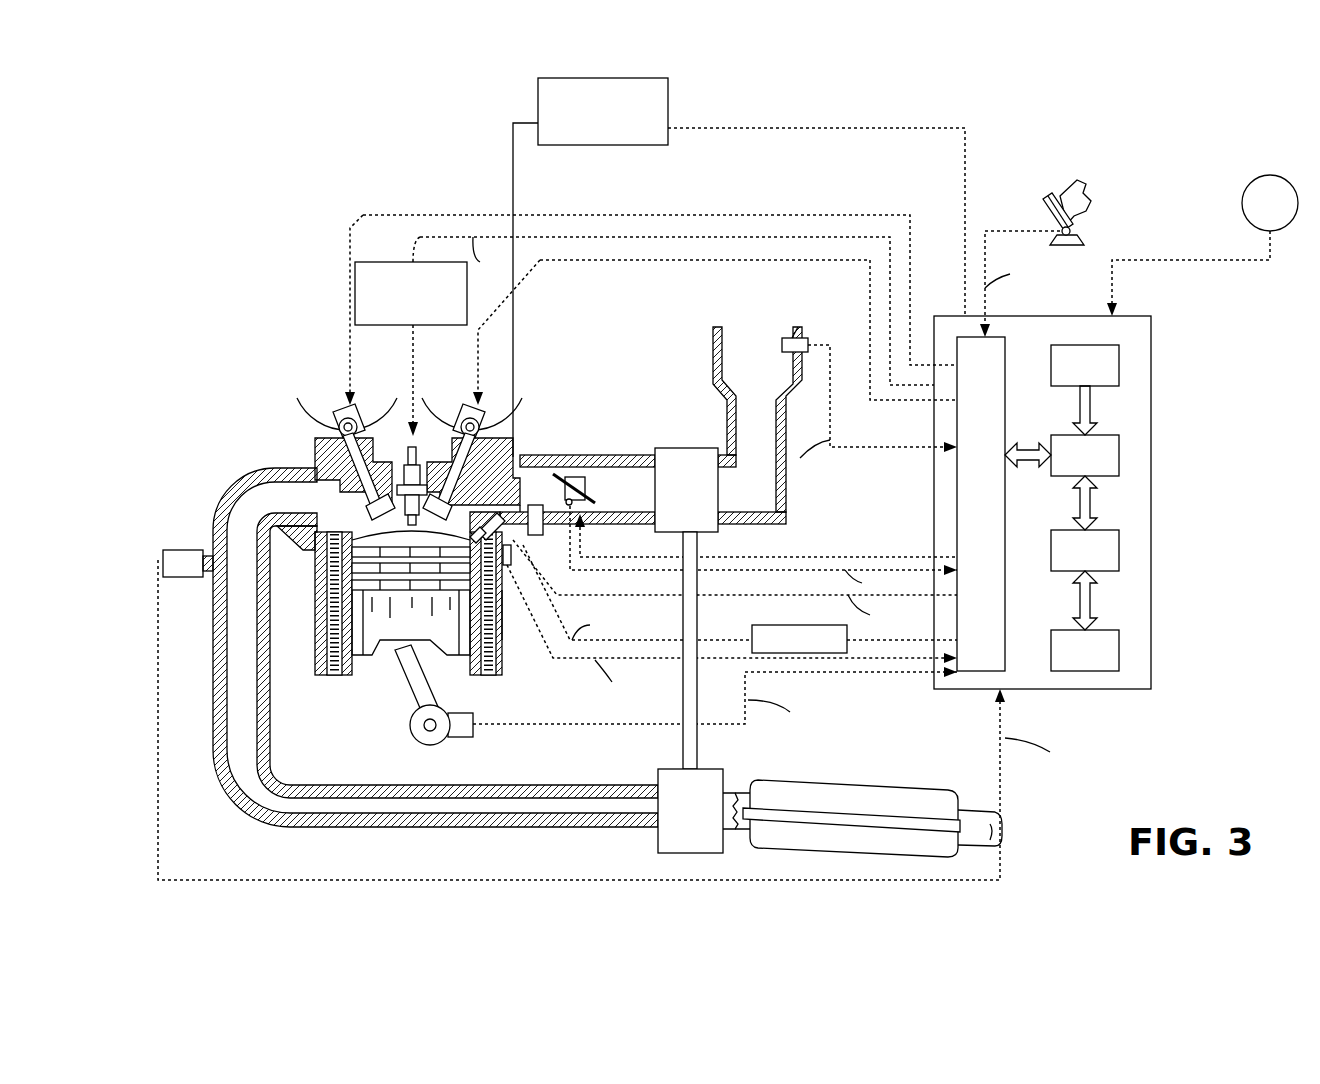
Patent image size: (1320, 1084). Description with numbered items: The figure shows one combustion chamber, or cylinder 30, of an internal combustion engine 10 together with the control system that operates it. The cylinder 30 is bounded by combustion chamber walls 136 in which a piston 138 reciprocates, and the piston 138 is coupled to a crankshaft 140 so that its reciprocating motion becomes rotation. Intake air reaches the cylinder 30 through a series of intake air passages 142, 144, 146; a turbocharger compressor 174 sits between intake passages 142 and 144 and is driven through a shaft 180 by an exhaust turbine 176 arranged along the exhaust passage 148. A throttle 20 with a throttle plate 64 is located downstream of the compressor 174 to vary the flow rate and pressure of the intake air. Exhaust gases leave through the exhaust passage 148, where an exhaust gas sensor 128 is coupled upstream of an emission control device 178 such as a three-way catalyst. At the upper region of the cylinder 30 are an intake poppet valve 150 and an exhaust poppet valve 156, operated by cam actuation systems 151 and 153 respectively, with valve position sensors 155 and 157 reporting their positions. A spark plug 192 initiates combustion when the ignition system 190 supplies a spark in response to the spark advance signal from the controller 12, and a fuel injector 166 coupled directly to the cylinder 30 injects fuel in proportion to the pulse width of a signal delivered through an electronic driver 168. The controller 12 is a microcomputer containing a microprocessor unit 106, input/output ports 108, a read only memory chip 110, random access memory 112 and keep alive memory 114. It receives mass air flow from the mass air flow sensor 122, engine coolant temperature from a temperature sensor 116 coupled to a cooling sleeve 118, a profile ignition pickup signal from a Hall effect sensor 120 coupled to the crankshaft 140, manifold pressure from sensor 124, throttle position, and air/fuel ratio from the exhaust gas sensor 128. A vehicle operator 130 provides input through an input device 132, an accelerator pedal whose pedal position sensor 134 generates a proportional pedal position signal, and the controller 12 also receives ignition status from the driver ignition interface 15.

The engine 10 is at (143, 152).
The controller 12 is at (1138, 316).
The driver ignition interface 15 is at (1202, 245).
The throttle 20 is at (668, 85).
The cylinder 30 is at (312, 556).
The throttle plate 64 is at (555, 476).
The microprocessor unit 106 is at (1119, 452).
The input/output ports 108 is at (1005, 345).
The read only memory chip 110 is at (1119, 365).
The random access memory 112 is at (1119, 550).
The keep alive memory 114 is at (1119, 650).
The temperature sensor 116 is at (510, 567).
The cooling sleeve 118 is at (505, 600).
The Hall effect sensor 120 is at (468, 740).
The mass air flow sensor 122 is at (804, 336).
The manifold pressure sensor 124 is at (543, 540).
The exhaust gas sensor 128 is at (163, 560).
The vehicle operator 130 is at (1100, 196).
The input device 132 is at (1046, 203).
The pedal position sensor 134 is at (1082, 232).
The combustion chamber walls 136 is at (345, 676).
The piston 138 is at (395, 628).
The crankshaft 140 is at (418, 742).
The intake air passage 142 is at (757, 419).
The intake air passage 144 is at (628, 497).
The intake air passage 146 is at (535, 496).
The exhaust passage 148 is at (435, 647).
The intake poppet valve 150 is at (420, 500).
The cam actuation system 151 is at (466, 412).
The cam actuation system 153 is at (355, 412).
The valve position sensor 155 is at (485, 418).
The exhaust poppet valve 156 is at (358, 470).
The valve position sensor 157 is at (333, 414).
The fuel injector 166 is at (709, 568).
The electronic driver 168 is at (755, 625).
The compressor 174 is at (672, 448).
The exhaust turbine 176 is at (658, 840).
The emission control device 178 is at (920, 790).
The shaft 180 is at (697, 735).
The ignition system 190 is at (375, 262).
The spark plug 192 is at (392, 465).